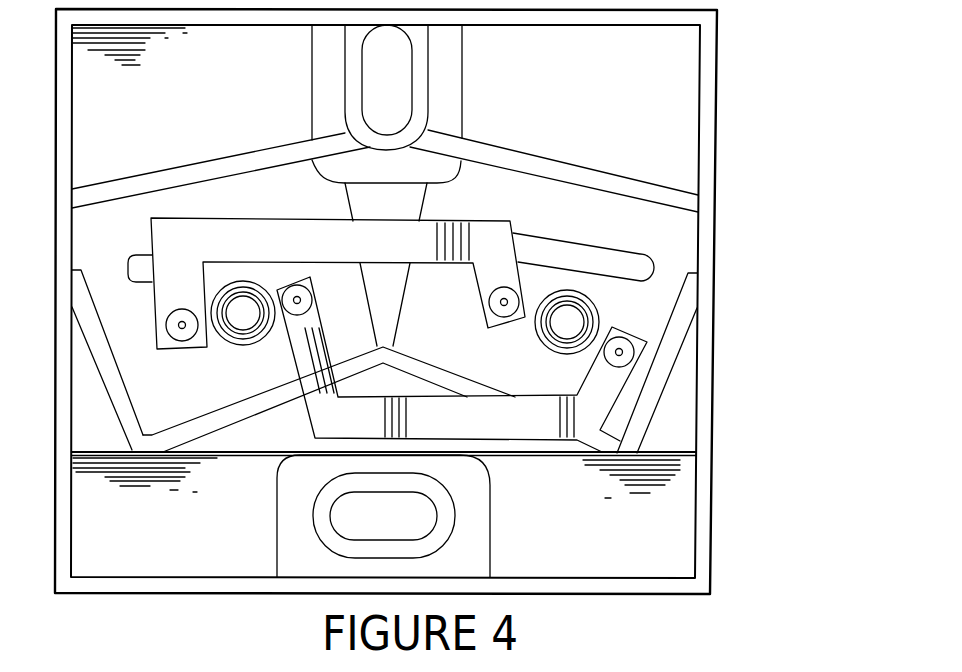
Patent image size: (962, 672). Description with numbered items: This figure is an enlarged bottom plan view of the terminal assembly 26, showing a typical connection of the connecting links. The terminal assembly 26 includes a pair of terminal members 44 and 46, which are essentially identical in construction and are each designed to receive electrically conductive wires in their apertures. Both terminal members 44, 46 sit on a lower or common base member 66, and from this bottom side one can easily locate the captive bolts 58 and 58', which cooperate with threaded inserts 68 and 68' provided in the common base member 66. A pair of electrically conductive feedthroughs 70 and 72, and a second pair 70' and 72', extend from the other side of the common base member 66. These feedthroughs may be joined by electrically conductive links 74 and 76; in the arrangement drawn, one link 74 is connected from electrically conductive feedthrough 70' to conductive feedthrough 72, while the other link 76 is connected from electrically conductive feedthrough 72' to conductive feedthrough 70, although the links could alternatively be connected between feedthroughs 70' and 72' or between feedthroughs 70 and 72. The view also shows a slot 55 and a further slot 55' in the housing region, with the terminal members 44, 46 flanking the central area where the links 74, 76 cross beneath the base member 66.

The terminal assembly 26 is at (728, 108).
The common base member 66 is at (605, 92).
The terminal member 46 is at (98, 228).
The terminal member 44 is at (678, 254).
The upper slot 55 is at (364, 185).
The lower slot 55' is at (352, 516).
The electrically conductive link 74 is at (210, 237).
The electrically conductive link 76 is at (590, 407).
The electrically conductive feedthrough 70 is at (580, 362).
The electrically conductive feedthrough 70' is at (152, 319).
The electrically conductive feedthrough 72 is at (534, 258).
The electrically conductive feedthrough 72' is at (294, 247).
The captive bolt 58 is at (589, 322).
The captive bolt 58' is at (246, 331).
The threaded insert 68 is at (532, 334).
The threaded insert 68' is at (229, 347).